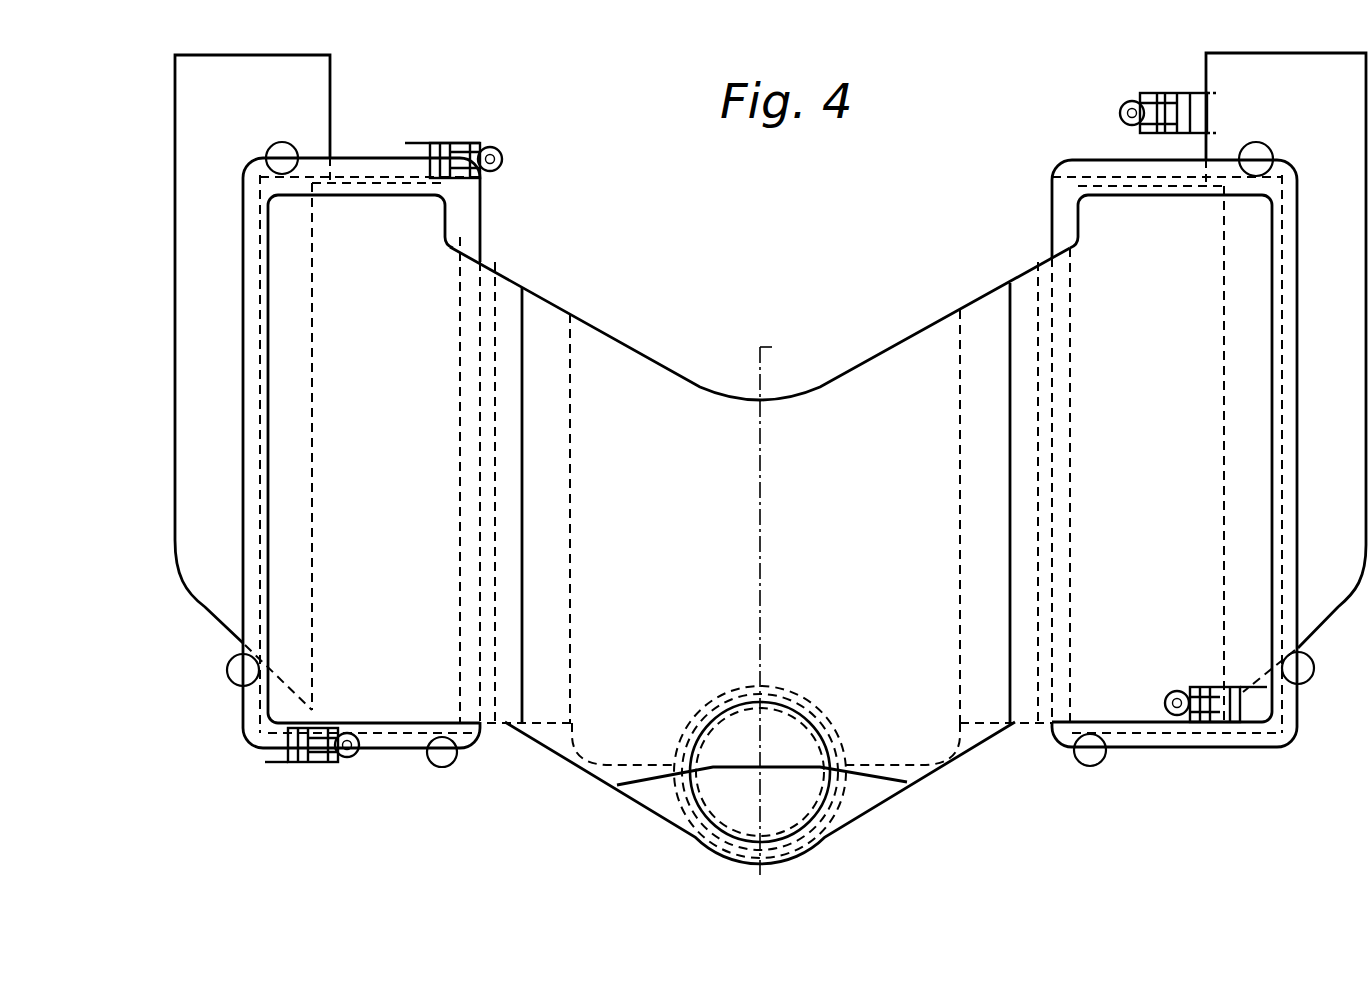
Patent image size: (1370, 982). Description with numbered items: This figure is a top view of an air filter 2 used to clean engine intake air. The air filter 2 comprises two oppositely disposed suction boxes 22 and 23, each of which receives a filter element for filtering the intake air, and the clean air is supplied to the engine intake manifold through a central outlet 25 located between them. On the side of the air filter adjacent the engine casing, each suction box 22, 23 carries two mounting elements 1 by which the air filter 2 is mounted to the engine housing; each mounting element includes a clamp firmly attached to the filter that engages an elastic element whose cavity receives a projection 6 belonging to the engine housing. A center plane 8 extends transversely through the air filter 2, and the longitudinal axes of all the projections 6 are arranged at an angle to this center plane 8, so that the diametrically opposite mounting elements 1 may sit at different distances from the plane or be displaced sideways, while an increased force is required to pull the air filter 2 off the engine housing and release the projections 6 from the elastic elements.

The mounting element 1 is at (450, 138).
The air filter 2 is at (647, 357).
The projection 6 is at (500, 152).
The center plane 8 is at (772, 347).
The suction box 22 is at (352, 158).
The suction box 23 is at (1165, 748).
The central outlet 25 is at (798, 740).